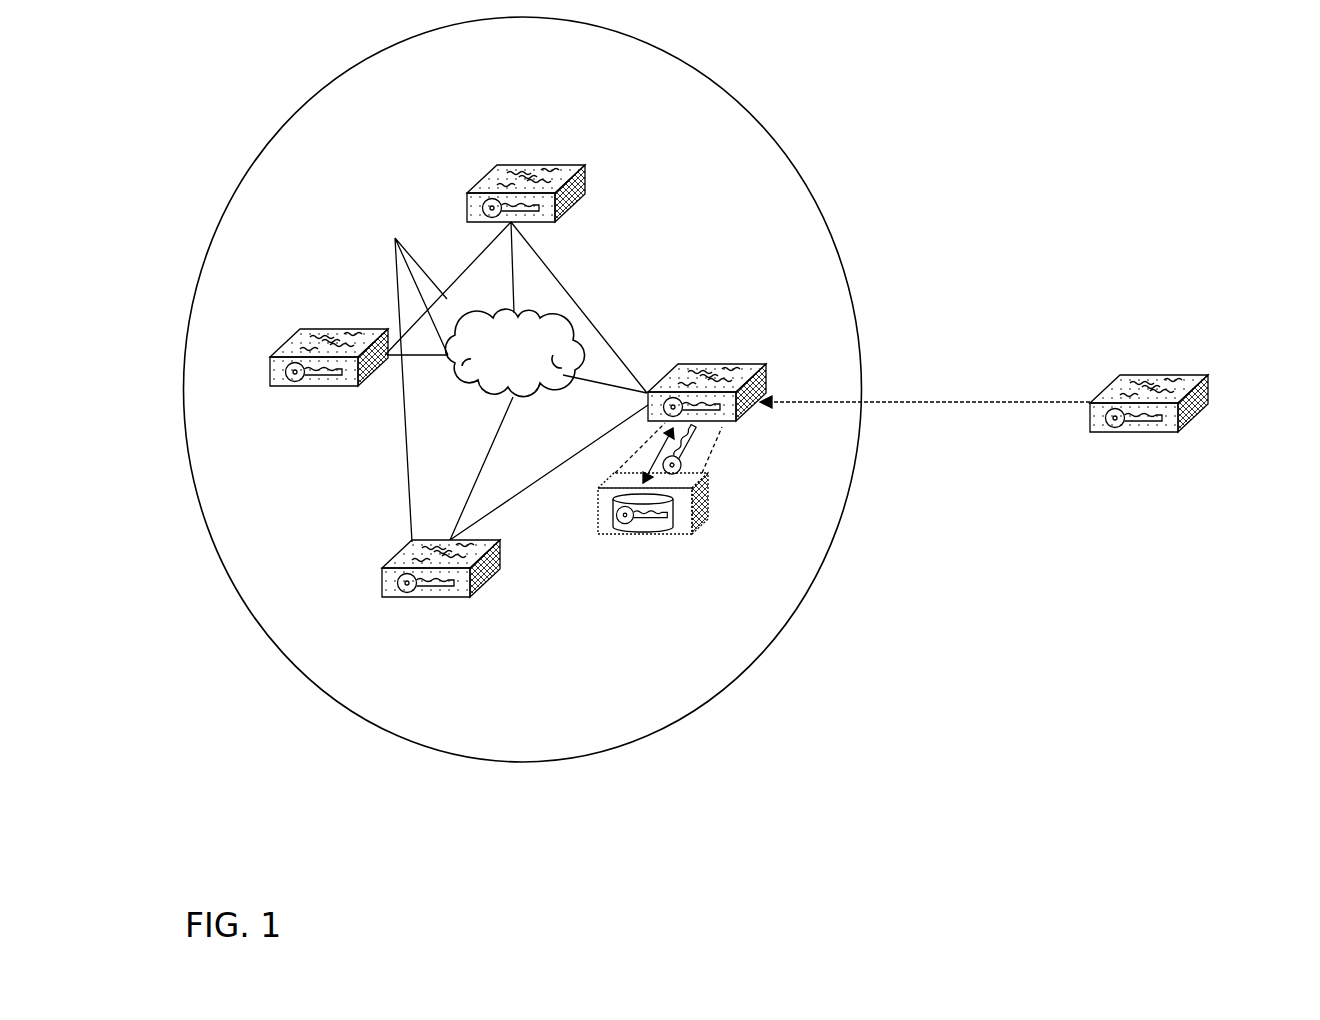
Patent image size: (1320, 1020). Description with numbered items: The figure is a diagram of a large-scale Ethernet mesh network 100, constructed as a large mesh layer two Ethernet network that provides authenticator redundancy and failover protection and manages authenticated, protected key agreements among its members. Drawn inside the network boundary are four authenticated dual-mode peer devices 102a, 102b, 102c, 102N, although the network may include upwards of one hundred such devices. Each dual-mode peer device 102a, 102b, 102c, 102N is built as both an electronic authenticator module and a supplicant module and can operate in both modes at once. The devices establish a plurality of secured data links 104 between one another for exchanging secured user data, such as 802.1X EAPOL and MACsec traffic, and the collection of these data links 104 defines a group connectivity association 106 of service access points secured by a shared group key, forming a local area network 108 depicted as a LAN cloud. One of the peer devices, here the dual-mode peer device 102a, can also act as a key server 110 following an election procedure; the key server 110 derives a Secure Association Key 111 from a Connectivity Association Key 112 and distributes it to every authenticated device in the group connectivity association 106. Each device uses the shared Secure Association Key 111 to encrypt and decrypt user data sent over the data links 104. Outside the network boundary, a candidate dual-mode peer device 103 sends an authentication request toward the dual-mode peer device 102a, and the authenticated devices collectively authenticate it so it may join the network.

The large-scale Ethernet mesh network 100 is at (249, 128).
The dual-mode peer device 102N is at (491, 156).
The dual-mode peer device 102a is at (779, 366).
The dual-mode peer device 102b is at (497, 600).
The dual-mode peer device 102c is at (312, 399).
The candidate dual-mode peer device 103 is at (1208, 424).
The secured data links 104 is at (398, 231).
The group connectivity association 106 is at (647, 305).
The local area network 108 is at (532, 367).
The key server 110 is at (603, 549).
The Secure Association Key 111 is at (480, 213).
The Connectivity Association Key 112 is at (630, 522).